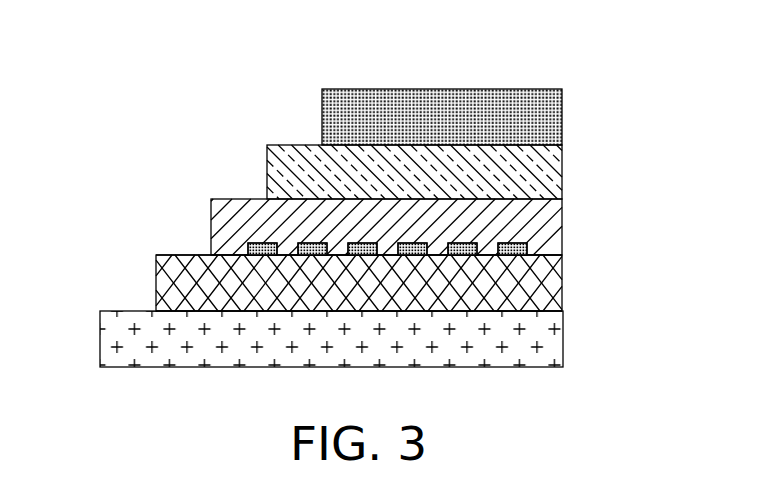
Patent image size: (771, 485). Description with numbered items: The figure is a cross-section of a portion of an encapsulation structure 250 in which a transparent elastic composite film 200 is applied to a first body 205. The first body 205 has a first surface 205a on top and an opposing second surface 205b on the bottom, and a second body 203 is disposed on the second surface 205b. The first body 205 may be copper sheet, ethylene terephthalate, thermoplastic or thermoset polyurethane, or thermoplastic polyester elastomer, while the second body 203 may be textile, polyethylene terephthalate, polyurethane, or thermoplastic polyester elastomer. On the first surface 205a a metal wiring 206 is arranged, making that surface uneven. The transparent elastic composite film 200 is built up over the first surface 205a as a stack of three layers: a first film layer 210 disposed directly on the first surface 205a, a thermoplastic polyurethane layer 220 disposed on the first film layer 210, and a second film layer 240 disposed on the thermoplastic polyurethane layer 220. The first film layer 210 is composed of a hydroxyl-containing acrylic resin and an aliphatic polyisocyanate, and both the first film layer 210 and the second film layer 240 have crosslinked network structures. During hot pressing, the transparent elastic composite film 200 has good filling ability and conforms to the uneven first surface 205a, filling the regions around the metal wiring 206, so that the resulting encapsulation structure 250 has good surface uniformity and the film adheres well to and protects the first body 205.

The encapsulation structure 250 is at (371, 194).
The transparent elastic composite film 200 is at (434, 172).
The second film layer 240 is at (493, 117).
The thermoplastic polyurethane layer 220 is at (562, 169).
The first film layer 210 is at (562, 225).
The metal wiring 206 is at (258, 242).
The first body 205 is at (562, 281).
The first surface 205a is at (178, 255).
The second surface 205b is at (181, 311).
The second body 203 is at (562, 335).